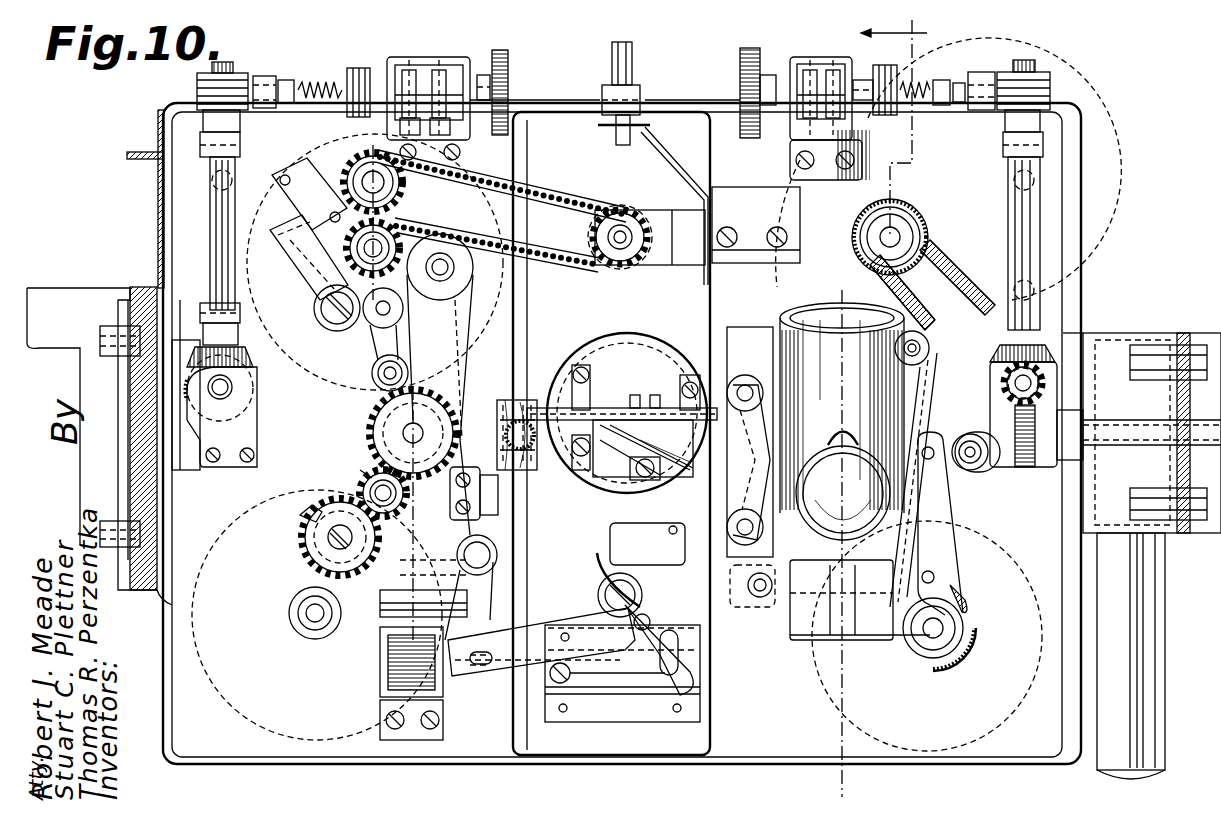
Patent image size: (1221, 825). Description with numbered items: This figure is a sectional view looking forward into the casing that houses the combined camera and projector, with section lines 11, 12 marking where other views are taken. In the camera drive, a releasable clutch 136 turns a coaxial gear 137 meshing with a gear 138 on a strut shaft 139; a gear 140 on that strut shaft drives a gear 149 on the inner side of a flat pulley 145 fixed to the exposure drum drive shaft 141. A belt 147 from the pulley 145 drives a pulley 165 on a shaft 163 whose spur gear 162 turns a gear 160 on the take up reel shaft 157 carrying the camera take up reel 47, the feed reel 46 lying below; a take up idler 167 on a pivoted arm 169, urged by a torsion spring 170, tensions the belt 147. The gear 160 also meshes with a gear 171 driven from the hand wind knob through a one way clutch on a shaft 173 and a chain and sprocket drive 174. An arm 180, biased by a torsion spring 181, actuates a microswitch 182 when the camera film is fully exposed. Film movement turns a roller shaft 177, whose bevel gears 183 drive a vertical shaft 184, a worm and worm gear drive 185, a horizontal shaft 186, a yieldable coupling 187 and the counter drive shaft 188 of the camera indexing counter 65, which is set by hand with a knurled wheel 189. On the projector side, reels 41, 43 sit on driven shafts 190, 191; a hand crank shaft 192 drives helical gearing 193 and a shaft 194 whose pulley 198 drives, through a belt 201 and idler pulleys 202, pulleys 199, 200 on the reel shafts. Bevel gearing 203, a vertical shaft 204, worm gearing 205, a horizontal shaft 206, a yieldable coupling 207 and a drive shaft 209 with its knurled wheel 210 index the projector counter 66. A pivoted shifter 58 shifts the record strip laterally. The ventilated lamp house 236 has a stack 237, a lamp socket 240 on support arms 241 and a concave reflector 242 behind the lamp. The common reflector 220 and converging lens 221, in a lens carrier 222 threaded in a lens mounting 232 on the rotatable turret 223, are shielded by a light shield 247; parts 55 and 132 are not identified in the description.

The section line 11- 11 is at (808, 786).
The main frame plate 12 is at (358, 33).
The reel 41 is at (927, 636).
The reel 43 is at (949, 169).
The feed reel 46 is at (262, 730).
The take up reel 47 is at (375, 262).
The panel 55 is at (634, 392).
The pivoted shifter 58 is at (700, 172).
The indexing counter 65 is at (435, 65).
The indexing counter 66 is at (808, 62).
The shaft 132 is at (320, 548).
The releasable clutch 136 is at (305, 514).
The gear 137 is at (302, 540).
The gear 138 is at (456, 583).
The strut shaft 139 is at (366, 491).
The gear 140 is at (360, 480).
The drive shaft 141 is at (372, 468).
The flat pulley 145 is at (404, 433).
The belt 147 is at (485, 302).
The gear 149 is at (428, 398).
The shaft 157 is at (385, 238).
The gear 160 is at (395, 246).
The spur gear 162 is at (447, 222).
The shaft 163 is at (447, 265).
The pulley 165 is at (440, 300).
The take up idler 167 is at (382, 386).
The pivoted arm 169 is at (372, 338).
The torsion spring 170 is at (372, 372).
The gear 171 is at (360, 160).
The shaft 173 is at (624, 235).
The chain and sprocket drive 174 is at (584, 270).
The shaft 177 is at (228, 387).
The arm 180 is at (314, 304).
The torsion spring 181 is at (292, 268).
The microswitch 182 is at (275, 196).
The bevel gears 183 is at (197, 420).
The vertical shaft 184 is at (215, 215).
The worm and worm gear drive 185 is at (240, 72).
The horizontal shaft 186 is at (284, 78).
The yieldable coupling 187 is at (360, 68).
The counter drive shaft 188 is at (472, 78).
The knurled wheel 189 is at (506, 72).
The driven shaft 190 is at (945, 628).
The driven shaft 191 is at (893, 235).
The shaft 192 is at (1126, 450).
The helical gearing 193 is at (1030, 468).
The shaft 194 is at (1030, 378).
The pulley 198 is at (1048, 385).
The pulley 199 is at (930, 672).
The pulley 200 is at (866, 222).
The belt 201 is at (958, 262).
The idler pulleys 202 is at (930, 340).
The bevel gearing 203 is at (992, 368).
The vertical shaft 204 is at (1030, 192).
The worm gearing 205 is at (1045, 76).
The horizontal shaft 206 is at (966, 68).
The yieldable coupling 207 is at (895, 58).
The drive shaft 209 is at (857, 80).
The knurled wheel 210 is at (750, 50).
The reflector 220 is at (570, 624).
The converging lens 221 is at (510, 402).
The lens carrier 222 is at (535, 470).
The turret 223 is at (625, 465).
The lens mounting 232 is at (486, 508).
The lamp house 236 is at (773, 460).
The stack 237 is at (790, 335).
The socket 240 is at (857, 620).
The support arms 241 is at (920, 563).
The concave reflector 242 is at (835, 480).
The light shield 247 is at (608, 405).